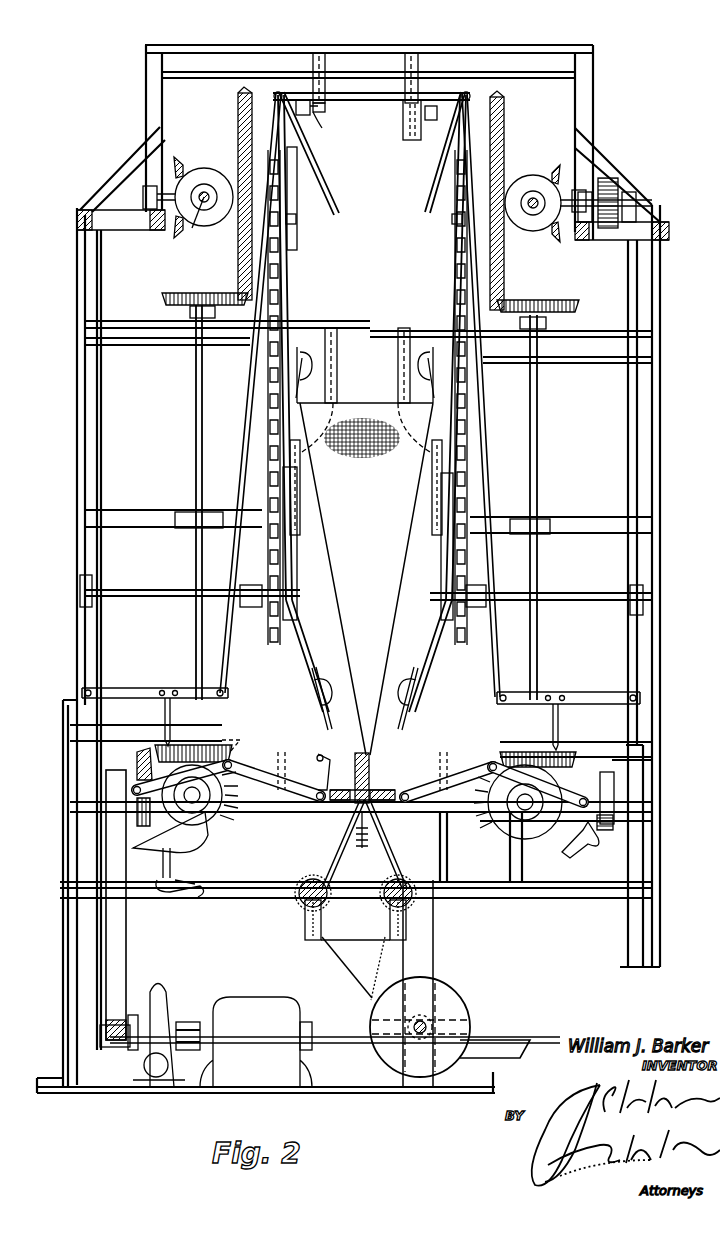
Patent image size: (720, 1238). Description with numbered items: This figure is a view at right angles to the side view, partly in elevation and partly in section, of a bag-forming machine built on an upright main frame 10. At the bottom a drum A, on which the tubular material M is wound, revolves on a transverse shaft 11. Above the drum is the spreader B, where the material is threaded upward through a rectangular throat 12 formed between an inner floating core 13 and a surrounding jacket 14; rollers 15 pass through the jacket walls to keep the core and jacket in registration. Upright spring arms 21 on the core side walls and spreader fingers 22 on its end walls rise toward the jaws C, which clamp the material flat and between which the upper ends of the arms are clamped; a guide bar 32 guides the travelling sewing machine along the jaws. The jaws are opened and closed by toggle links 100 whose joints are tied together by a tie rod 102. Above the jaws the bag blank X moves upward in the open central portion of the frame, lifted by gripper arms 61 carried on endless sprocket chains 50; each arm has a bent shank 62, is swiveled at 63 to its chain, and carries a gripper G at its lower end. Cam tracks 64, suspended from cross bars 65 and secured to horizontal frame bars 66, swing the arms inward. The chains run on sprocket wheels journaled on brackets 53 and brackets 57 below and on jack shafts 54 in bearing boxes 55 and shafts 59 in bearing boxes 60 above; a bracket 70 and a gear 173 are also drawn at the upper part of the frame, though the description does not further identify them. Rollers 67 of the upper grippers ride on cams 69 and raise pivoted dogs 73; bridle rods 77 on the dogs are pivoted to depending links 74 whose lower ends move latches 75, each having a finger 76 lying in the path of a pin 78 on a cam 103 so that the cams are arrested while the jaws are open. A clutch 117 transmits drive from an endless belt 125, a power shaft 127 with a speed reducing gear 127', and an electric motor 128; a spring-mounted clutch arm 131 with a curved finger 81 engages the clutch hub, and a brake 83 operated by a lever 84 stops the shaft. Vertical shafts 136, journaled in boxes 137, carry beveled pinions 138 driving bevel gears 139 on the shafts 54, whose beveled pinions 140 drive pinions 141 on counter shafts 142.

The main frame 10 is at (84, 471).
The transverse shaft 11 is at (440, 1028).
The throat 12 is at (306, 929).
The floating core 13 is at (378, 938).
The jacket 14 is at (415, 928).
The rollers 15 is at (310, 900).
The spring arms 21 is at (335, 858).
The spreader fingers 22 is at (338, 846).
The guide bar 32 is at (320, 752).
The sprocket chains 50 is at (268, 440).
The brackets 53 is at (250, 607).
The jack shafts 54 is at (165, 222).
The bearing boxes 55 is at (143, 192).
The brackets 57 is at (478, 607).
The shafts 59 is at (585, 195).
The bearing boxes 60 is at (584, 230).
The gripper arms 61 is at (296, 270).
The shank 62 is at (312, 196).
The swivel 63 is at (300, 222).
The cam tracks 64 is at (331, 390).
The cross bars 65 is at (366, 324).
The horizontal frame bars 66 is at (147, 512).
The rollers 67 is at (386, 120).
The cams 69 is at (330, 53).
The bracket 70 is at (303, 104).
The pivoted dogs 73 is at (412, 140).
The depending links 74 is at (249, 397).
The latches 75 is at (148, 688).
The depending finger 76 is at (165, 718).
The bridle rods 77 is at (386, 100).
The pin 78 is at (163, 850).
The curved finger 81 is at (176, 895).
The brake 83 is at (614, 780).
The lever 84 is at (585, 845).
The toggle links 100 is at (250, 768).
The tie rod 102 is at (240, 750).
The cams 103 is at (205, 832).
The clutch 117 is at (136, 756).
The endless belt 125 is at (106, 856).
The power shaft 127 is at (200, 1011).
The speed reducing gear 127' is at (158, 1015).
The electric motor 128 is at (278, 995).
The clutch arm 131 is at (200, 862).
The vertical shafts 136 is at (196, 560).
The boxes 137 is at (190, 528).
The beveled pinions 138 is at (162, 298).
The bevel gears 139 is at (238, 272).
The beveled pinions 140 is at (178, 165).
The pinions 141 is at (212, 178).
The counter shafts 142 is at (194, 225).
The gear 173 is at (628, 182).
The drum A is at (455, 1008).
The spreader B is at (398, 945).
The jaws C is at (380, 790).
The gripper G is at (418, 368).
The tubular material M is at (348, 985).
The bag blank X is at (378, 590).